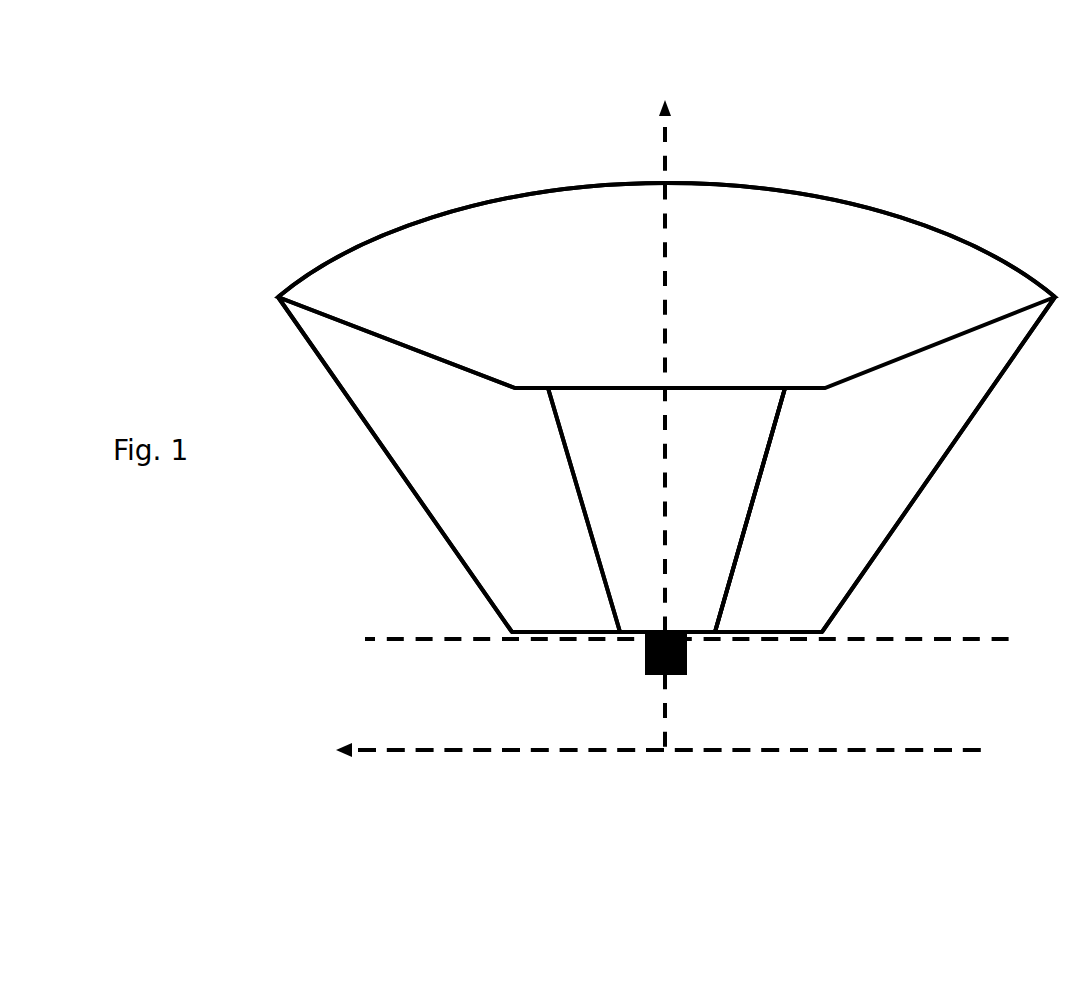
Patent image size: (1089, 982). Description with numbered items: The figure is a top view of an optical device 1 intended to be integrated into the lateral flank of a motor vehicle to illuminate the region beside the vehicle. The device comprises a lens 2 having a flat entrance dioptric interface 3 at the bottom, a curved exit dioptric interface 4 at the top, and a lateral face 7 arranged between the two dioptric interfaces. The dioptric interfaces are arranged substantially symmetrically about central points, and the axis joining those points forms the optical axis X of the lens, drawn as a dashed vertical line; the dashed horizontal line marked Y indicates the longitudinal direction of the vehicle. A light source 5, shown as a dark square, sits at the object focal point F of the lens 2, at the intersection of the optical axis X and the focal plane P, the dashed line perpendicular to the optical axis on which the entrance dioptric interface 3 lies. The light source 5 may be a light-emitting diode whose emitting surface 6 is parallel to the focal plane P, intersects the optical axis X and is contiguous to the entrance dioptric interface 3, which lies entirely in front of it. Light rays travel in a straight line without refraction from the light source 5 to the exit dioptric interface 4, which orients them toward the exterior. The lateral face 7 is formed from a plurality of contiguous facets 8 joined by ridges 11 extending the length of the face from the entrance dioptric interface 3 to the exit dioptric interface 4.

The optical device 1 is at (352, 176).
The lens 2 is at (305, 265).
The entrance dioptric interface 3 is at (545, 634).
The exit dioptric interface 4 is at (895, 242).
The light source 5 is at (690, 650).
The emitting surface 6 is at (655, 622).
The lateral face 7 is at (415, 405).
The facets 8 is at (437, 473).
The ridges 11 is at (765, 463).
The optical axis X is at (682, 162).
The y direction Y is at (423, 752).
The focal plane P is at (387, 636).
The object focal point F is at (666, 626).